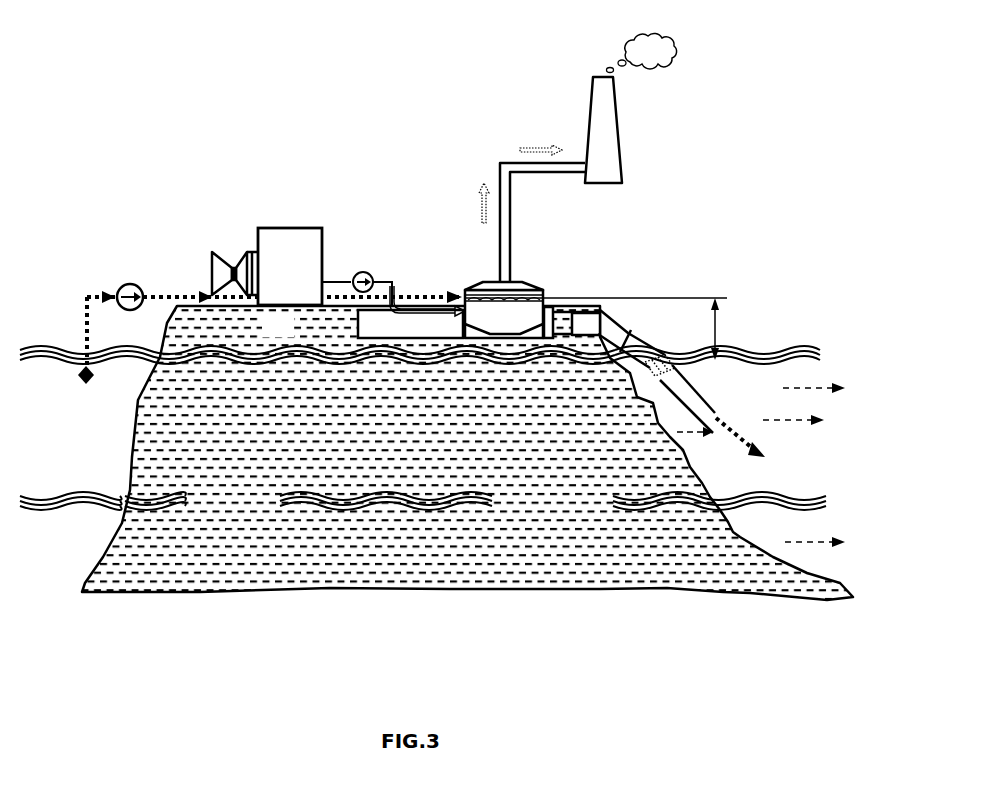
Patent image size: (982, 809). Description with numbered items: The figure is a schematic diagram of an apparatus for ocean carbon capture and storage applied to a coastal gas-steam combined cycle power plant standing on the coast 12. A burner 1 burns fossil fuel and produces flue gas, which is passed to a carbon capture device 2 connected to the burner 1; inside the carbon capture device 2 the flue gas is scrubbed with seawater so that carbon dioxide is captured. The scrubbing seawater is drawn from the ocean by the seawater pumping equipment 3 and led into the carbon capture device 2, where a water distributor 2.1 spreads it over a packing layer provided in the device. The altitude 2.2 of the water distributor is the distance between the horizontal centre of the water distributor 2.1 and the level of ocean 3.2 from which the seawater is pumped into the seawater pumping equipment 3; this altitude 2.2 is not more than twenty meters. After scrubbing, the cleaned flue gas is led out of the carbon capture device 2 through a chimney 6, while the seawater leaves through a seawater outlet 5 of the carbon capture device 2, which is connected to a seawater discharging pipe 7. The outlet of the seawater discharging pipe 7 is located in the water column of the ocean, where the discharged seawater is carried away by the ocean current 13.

The burner 1 is at (237, 262).
The carbon capture device 2 is at (498, 282).
The water distributor 2.1 is at (463, 292).
The altitude of water distributor 2.2 is at (717, 317).
The seawater pumping equipment 3 is at (128, 282).
The level of ocean 3.2 is at (777, 343).
The seawater outlet 5 is at (553, 310).
The chimney 6 is at (613, 160).
The seawater discharging pipe 7 is at (717, 413).
The coast 12 is at (467, 453).
The ocean current 13 is at (792, 420).